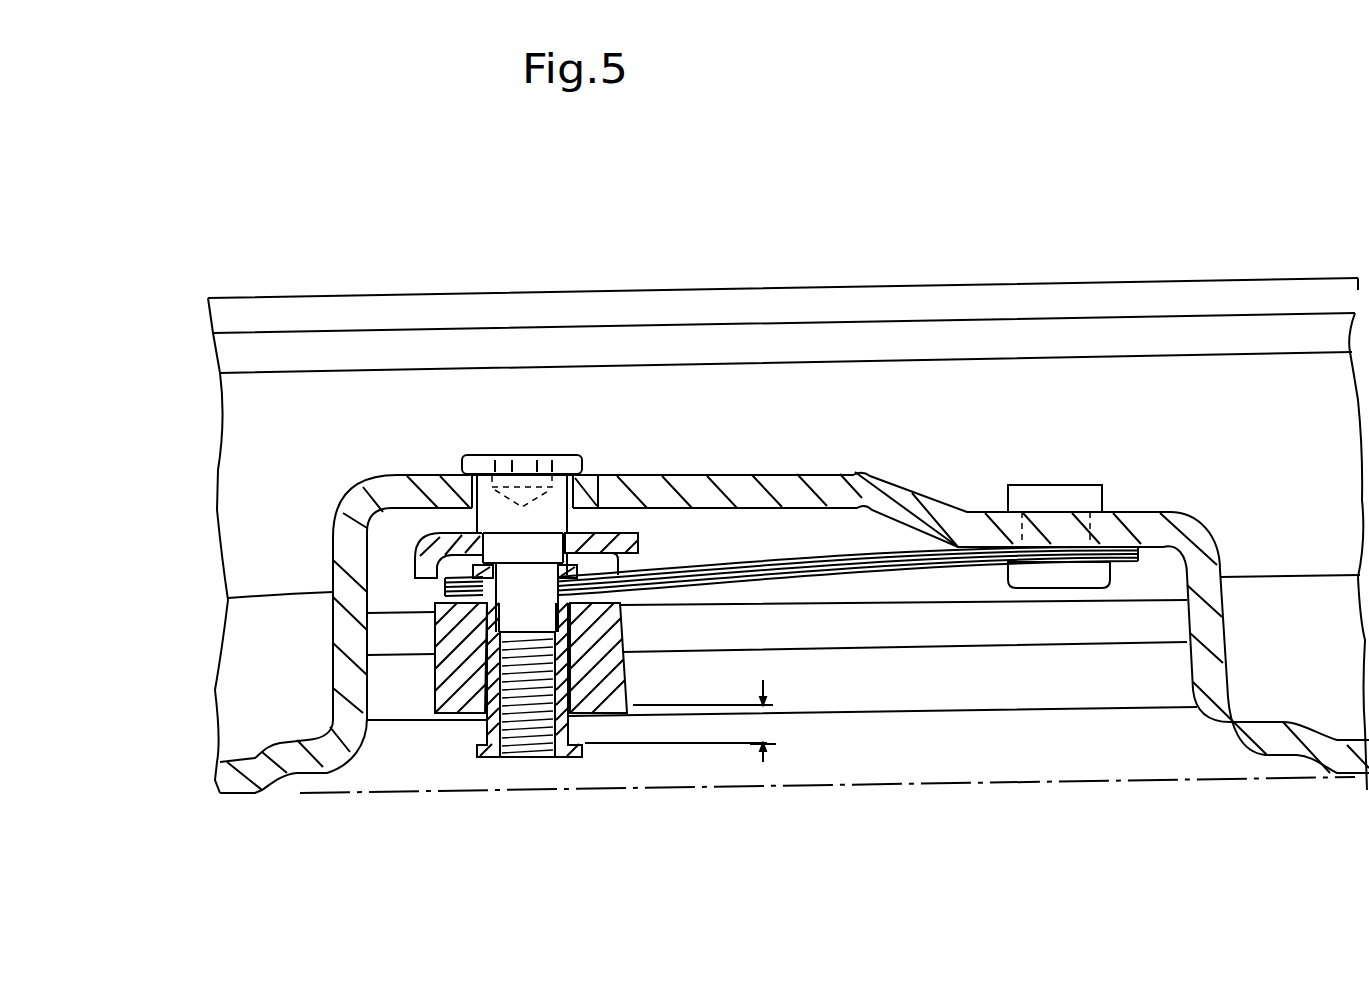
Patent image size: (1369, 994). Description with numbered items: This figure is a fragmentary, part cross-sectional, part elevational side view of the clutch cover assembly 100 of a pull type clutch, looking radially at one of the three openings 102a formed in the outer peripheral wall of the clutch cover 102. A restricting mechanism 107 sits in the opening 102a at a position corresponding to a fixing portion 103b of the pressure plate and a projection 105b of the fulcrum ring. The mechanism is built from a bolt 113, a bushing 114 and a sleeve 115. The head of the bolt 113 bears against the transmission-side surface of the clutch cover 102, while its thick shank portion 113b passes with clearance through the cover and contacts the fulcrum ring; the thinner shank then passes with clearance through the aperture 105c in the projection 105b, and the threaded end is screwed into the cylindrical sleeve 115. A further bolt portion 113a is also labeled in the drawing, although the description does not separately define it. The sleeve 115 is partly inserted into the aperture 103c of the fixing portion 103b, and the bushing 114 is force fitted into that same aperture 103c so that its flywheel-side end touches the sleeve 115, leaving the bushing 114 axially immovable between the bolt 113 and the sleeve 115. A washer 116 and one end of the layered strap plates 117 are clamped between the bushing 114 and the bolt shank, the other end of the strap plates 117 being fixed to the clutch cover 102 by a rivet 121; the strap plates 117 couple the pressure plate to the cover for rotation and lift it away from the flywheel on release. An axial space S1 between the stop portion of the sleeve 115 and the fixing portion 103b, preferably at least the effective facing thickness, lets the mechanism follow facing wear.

The clutch cover assembly 100 is at (985, 152).
The clutch cover 102 is at (657, 410).
The openings 102a is at (1060, 493).
The fixing portions 103b is at (605, 672).
The aperture (third aperture) 103c is at (600, 673).
The projections 105b is at (603, 540).
The aperture (second aperture) 105c is at (570, 485).
The restricting mechanism 107 is at (435, 432).
The bolt 113 is at (393, 417).
The bolt shank 113a is at (497, 515).
The thick shank portion 113b is at (478, 472).
The bushing 114 is at (480, 640).
The sleeve 115 is at (560, 715).
The washer 116 is at (470, 564).
The strap plates 117 is at (804, 560).
The rivet 121 is at (908, 508).
The space S1 is at (781, 721).